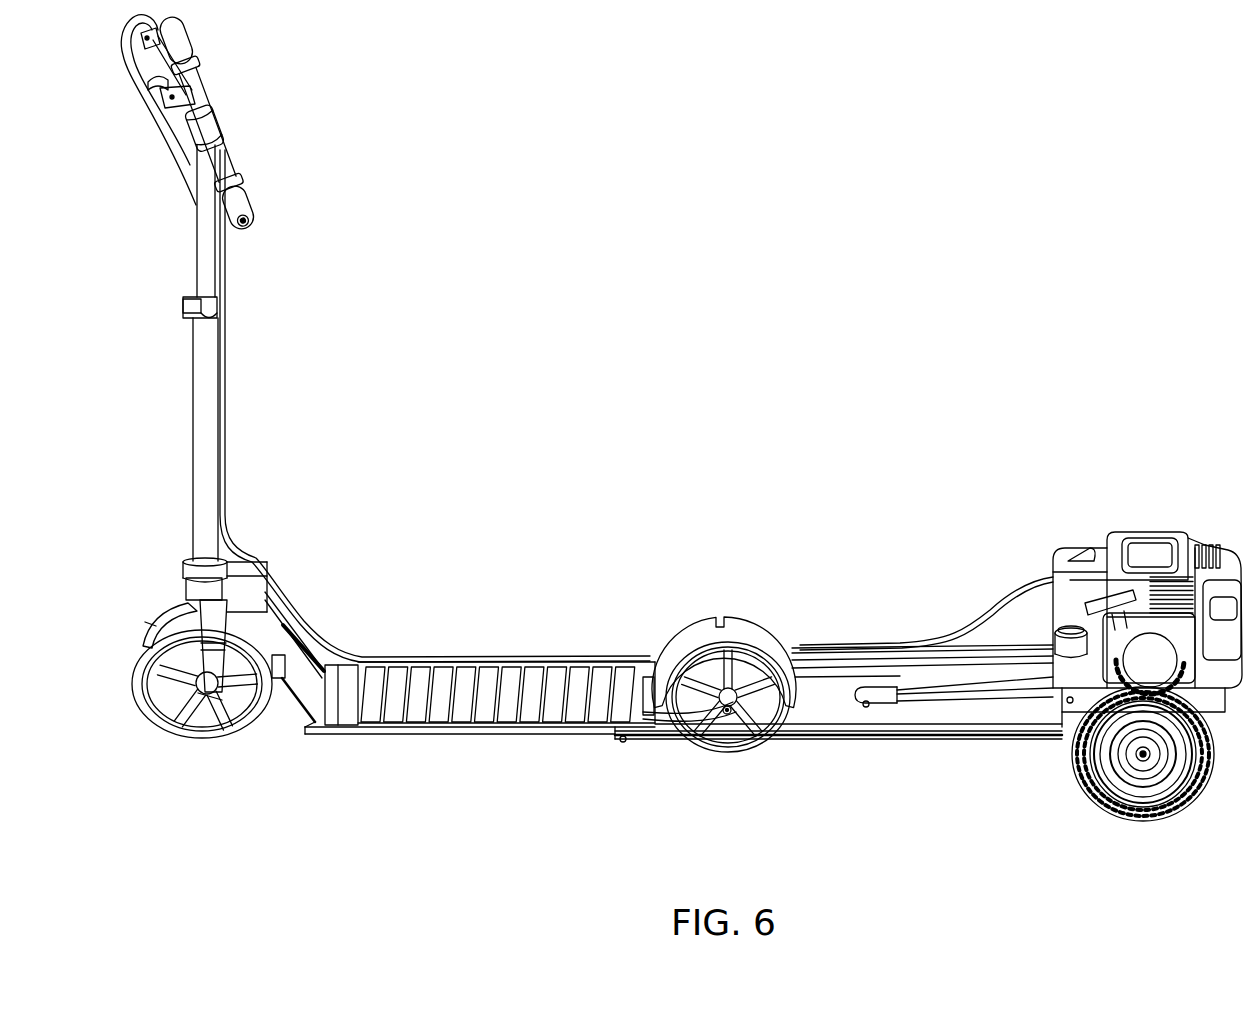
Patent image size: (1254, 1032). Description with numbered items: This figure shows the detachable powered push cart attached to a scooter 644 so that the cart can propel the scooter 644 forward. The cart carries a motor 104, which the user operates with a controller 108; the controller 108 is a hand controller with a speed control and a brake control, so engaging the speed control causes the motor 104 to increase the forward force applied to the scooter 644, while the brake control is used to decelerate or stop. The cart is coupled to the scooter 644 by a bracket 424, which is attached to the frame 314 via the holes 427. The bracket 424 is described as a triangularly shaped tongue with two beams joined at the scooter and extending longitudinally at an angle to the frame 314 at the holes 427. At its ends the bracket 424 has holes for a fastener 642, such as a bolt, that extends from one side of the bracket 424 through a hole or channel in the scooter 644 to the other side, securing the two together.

The motor 104 is at (1110, 519).
The controller 108 is at (138, 108).
The frame 314 is at (963, 680).
The bracket 424 is at (893, 650).
The holes 427 is at (1070, 730).
The fastener 642 is at (617, 745).
The scooter 644 is at (497, 665).